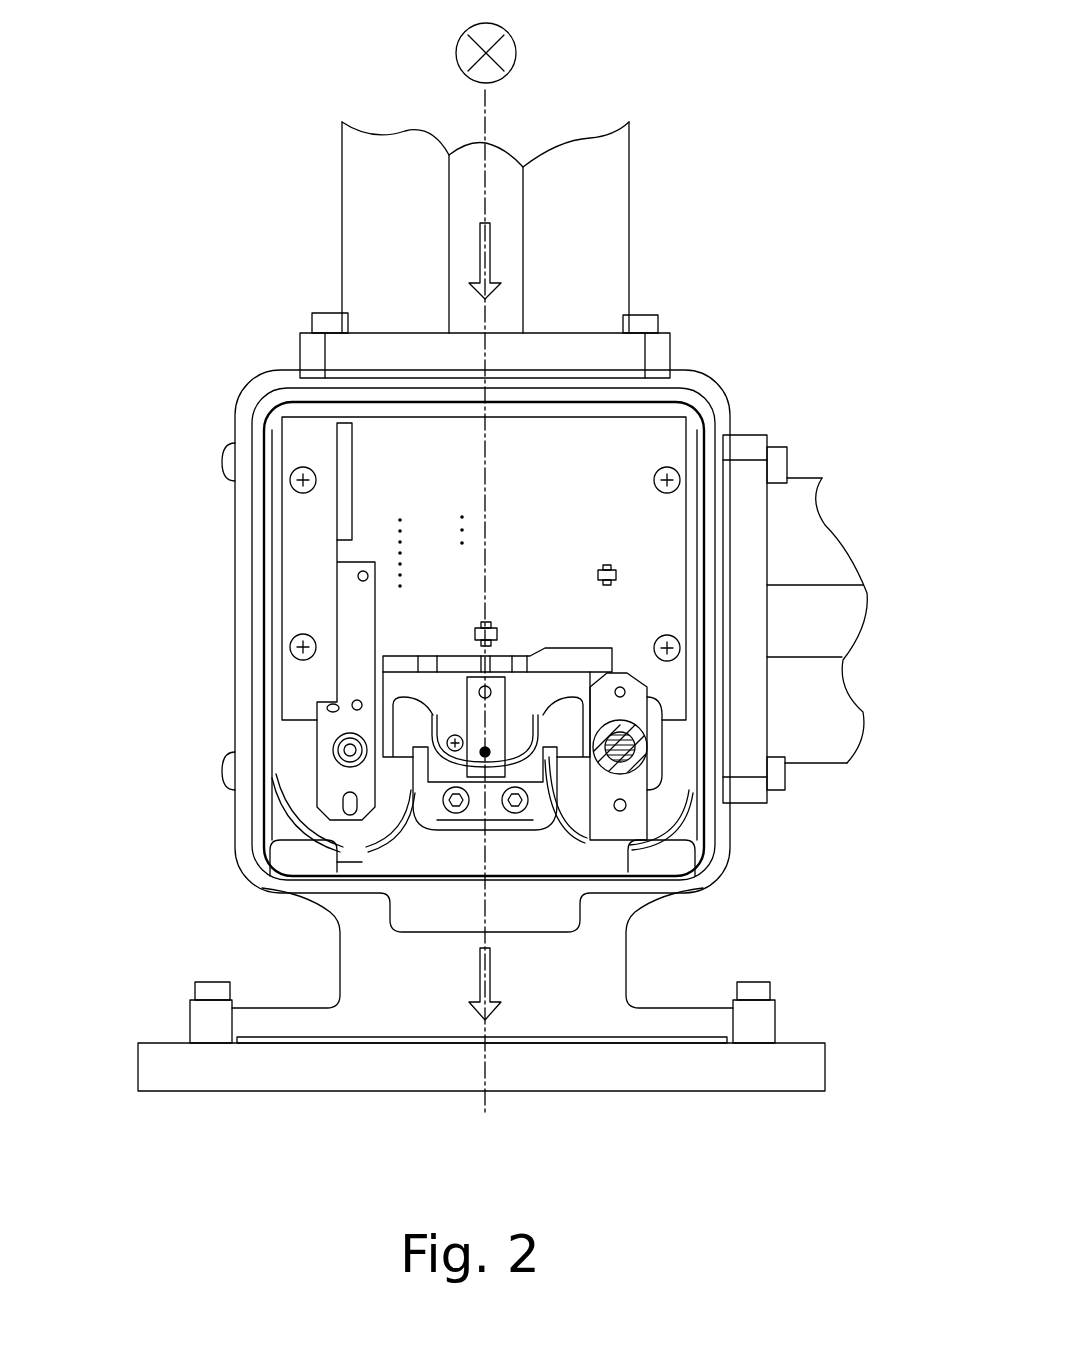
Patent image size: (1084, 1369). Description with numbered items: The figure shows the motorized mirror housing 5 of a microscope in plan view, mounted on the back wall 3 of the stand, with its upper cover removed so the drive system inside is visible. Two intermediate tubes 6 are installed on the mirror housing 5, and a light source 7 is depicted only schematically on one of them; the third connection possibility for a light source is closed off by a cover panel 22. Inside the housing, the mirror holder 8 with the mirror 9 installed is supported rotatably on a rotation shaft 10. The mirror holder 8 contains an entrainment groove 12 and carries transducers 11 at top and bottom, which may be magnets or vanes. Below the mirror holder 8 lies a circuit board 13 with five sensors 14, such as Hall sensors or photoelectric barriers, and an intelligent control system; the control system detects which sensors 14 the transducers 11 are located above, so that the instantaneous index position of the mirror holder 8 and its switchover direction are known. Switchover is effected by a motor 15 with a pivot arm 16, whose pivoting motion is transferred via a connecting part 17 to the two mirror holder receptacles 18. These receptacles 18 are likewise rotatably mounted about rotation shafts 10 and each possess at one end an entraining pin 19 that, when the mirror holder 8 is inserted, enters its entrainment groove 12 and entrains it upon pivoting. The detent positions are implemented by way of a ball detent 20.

The back wall 3 is at (193, 1069).
The motorized mirror housing 5 is at (402, 983).
The intermediate tube 6 is at (598, 207).
The light source 7 is at (503, 52).
The mirror holder 8 is at (352, 627).
The mirror 9 is at (345, 510).
The rotation shaft 10 is at (333, 748).
The transducer 11 is at (363, 576).
The entrainment groove 12 is at (347, 802).
The circuit board 13 is at (610, 450).
The sensor 14 is at (482, 627).
The motor 15 is at (519, 735).
The pivot arm 16 is at (480, 763).
The connecting part 17 is at (532, 685).
The mirror holder receptacle 18 is at (350, 825).
The entraining pin 19 is at (620, 805).
The ball detent 20 is at (350, 847).
The cover panel 22 is at (241, 524).